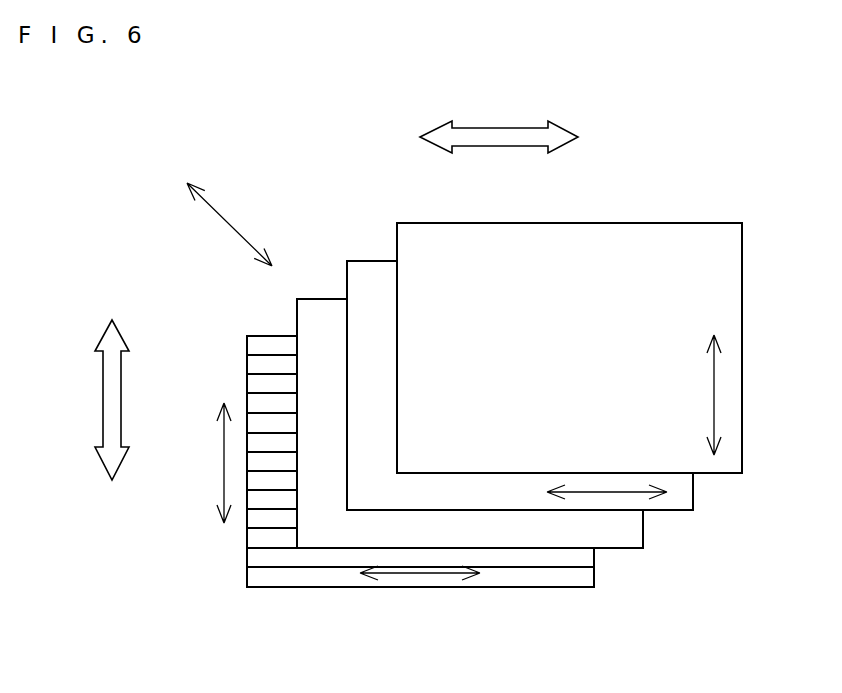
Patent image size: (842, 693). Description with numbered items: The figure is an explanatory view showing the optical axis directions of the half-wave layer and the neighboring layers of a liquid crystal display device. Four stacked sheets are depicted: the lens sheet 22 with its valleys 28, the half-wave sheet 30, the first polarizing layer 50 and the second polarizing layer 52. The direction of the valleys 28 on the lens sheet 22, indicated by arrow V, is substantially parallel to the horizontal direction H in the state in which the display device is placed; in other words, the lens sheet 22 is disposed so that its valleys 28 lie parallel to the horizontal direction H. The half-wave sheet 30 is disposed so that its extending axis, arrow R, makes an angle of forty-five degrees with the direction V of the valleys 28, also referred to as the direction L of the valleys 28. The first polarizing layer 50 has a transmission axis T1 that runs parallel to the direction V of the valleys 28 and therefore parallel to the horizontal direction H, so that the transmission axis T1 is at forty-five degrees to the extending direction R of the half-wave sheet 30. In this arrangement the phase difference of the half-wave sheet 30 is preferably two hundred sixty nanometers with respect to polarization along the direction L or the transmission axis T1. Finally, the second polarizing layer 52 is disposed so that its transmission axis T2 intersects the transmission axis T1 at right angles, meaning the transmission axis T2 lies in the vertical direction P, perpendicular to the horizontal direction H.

The lens sheet 22 is at (265, 343).
The valleys 28 is at (296, 568).
The λ/2 sheet 30 is at (313, 306).
The first polarizing layer 50 is at (365, 270).
The second polarizing layer 52 is at (413, 232).
The horizontal direction H is at (499, 121).
The vertical direction P is at (101, 400).
The extending direction R is at (218, 214).
The direction of the valleys L is at (224, 460).
The transmission axis T1 is at (612, 493).
The transmission axis T2 is at (714, 392).
The direction of the valleys V is at (420, 576).